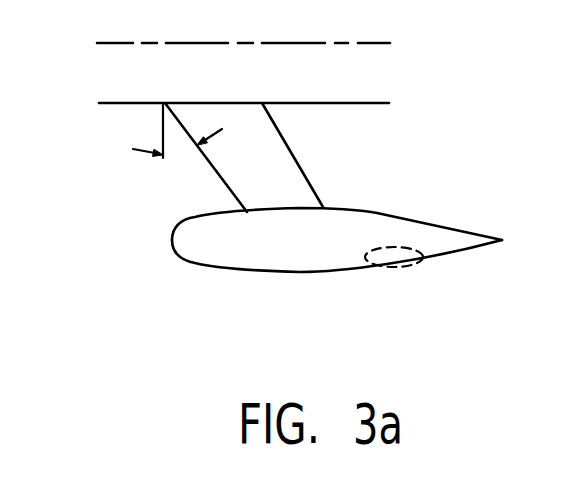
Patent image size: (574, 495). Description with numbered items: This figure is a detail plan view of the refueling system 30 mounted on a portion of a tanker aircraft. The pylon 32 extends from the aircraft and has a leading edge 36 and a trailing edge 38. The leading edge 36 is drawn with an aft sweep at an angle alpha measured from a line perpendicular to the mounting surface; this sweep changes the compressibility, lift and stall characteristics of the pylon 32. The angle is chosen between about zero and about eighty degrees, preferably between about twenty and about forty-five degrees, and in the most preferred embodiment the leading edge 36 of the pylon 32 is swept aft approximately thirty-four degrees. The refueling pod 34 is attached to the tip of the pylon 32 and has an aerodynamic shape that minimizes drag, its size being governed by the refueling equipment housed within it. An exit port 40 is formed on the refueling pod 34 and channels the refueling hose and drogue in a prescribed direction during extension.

The refueling system 30 is at (100, 164).
The pylon 32 is at (295, 186).
The refueling pod 34 is at (360, 223).
The leading edge 36 is at (226, 186).
The trailing edge 38 is at (283, 137).
The exit port 40 is at (405, 262).